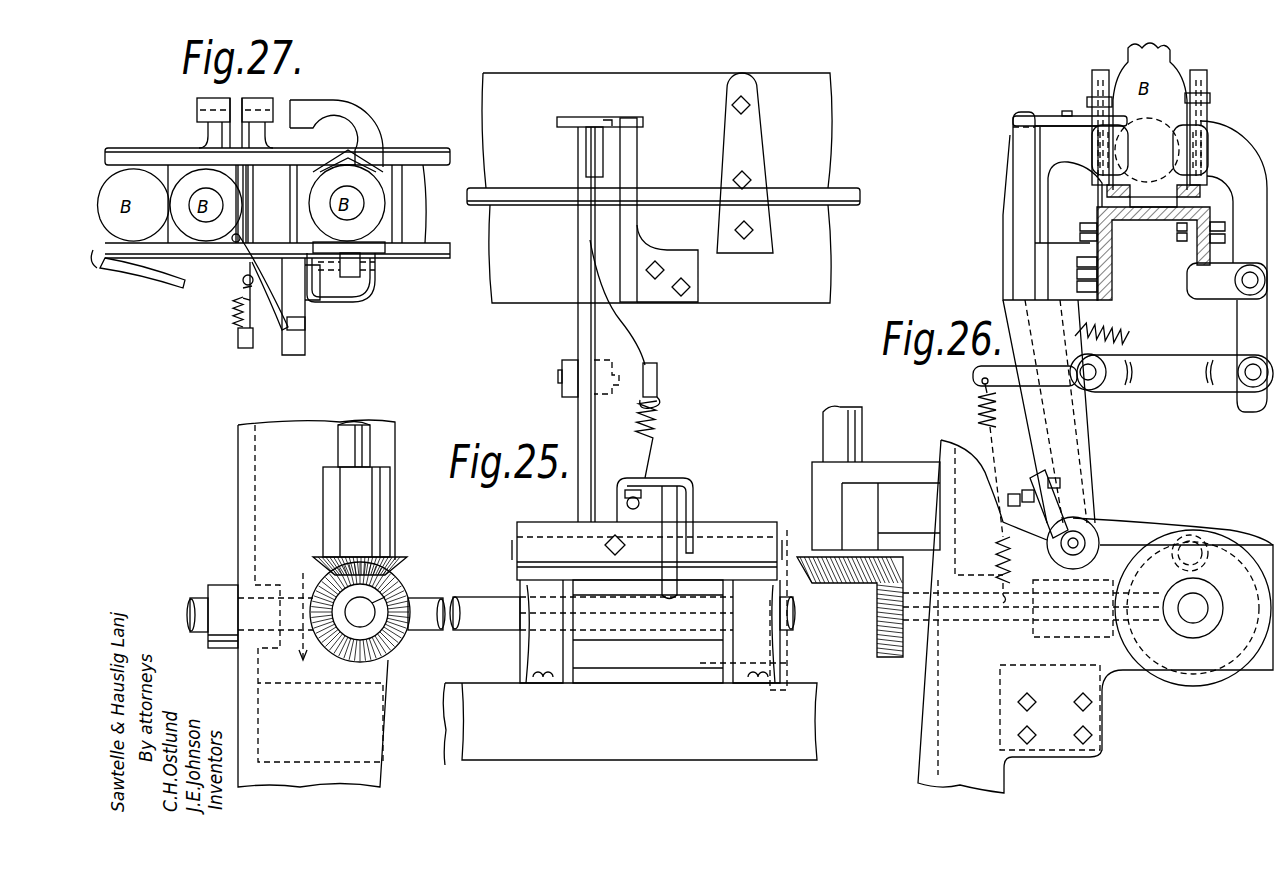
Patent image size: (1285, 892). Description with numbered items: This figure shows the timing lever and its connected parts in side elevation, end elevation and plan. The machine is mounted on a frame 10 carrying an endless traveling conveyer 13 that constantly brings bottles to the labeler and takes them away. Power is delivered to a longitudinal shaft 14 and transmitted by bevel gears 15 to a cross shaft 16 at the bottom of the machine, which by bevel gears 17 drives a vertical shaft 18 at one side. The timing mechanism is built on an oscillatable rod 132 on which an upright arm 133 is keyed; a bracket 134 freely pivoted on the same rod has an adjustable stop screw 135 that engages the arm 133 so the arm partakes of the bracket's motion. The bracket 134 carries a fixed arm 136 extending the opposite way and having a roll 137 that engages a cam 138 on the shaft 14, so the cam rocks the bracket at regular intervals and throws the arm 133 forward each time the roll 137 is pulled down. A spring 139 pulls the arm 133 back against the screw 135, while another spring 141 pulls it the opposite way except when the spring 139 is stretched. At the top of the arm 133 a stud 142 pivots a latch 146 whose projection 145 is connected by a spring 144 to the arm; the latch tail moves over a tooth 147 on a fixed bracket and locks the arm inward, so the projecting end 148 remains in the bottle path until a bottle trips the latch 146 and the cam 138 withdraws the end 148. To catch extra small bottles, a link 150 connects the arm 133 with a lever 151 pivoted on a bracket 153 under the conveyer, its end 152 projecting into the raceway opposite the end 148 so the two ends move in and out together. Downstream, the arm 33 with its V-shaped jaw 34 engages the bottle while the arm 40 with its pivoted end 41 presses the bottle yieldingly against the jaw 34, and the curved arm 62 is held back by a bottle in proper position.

In FIG. 25, the frame 10 is at (240, 520).
In FIG. 26, the frame 10 is at (922, 706).
In FIG. 27, the traveling conveyer 13 is at (420, 222).
In FIG. 25, the traveling conveyer 13 is at (860, 198).
In FIG. 26, the traveling conveyer 13 is at (1140, 220).
In FIG. 25, the longitudinal shaft 14 is at (492, 600).
In FIG. 26, the longitudinal shaft 14 is at (1192, 614).
In FIG. 25, the bevel gears 15 is at (300, 660).
In FIG. 26, the bevel gears 15 is at (1173, 647).
In FIG. 25, the cross shaft 16 is at (372, 605).
In FIG. 26, the cross shaft 16 is at (983, 622).
In FIG. 25, the bevel gears 17 is at (400, 562).
In FIG. 26, the bevel gears 17 is at (877, 597).
In FIG. 25, the vertical shaft 18 is at (342, 448).
In FIG. 26, the vertical shaft 18 is at (825, 428).
In FIG. 27, the arm 33 is at (358, 110).
In FIG. 27, the V-shaped jaw 34 is at (365, 160).
In FIG. 27, the arm 40 is at (370, 293).
In FIG. 27, the pivoted end 41 is at (380, 255).
In FIG. 27, the arm 62 is at (158, 272).
In FIG. 25, the oscillatable rod 132 is at (517, 548).
In FIG. 26, the oscillatable rod 132 is at (1085, 532).
In FIG. 27, the arm 133 is at (247, 350).
In FIG. 25, the arm 133 is at (578, 245).
In FIG. 26, the arm 133 is at (1003, 143).
In FIG. 25, the bracket 134 is at (688, 487).
In FIG. 26, the bracket 134 is at (1058, 508).
In FIG. 25, the adjustable stop screw 135 is at (626, 504).
In FIG. 26, the adjustable stop screw 135 is at (1035, 495).
In FIG. 26, the fixed arm 136 is at (1143, 537).
In FIG. 26, the roll 137 is at (1205, 545).
In FIG. 25, the cam 138 is at (712, 663).
In FIG. 26, the cam 138 is at (1233, 683).
In FIG. 25, the spring 139 is at (656, 416).
In FIG. 26, the spring 139 is at (978, 410).
In FIG. 26, the spring 141 is at (1129, 333).
In FIG. 27, the stud 142 is at (245, 288).
In FIG. 25, the stud 142 is at (597, 117).
In FIG. 26, the stud 142 is at (1067, 111).
In FIG. 27, the spring 144 is at (236, 312).
In FIG. 25, the spring 144 is at (566, 131).
In FIG. 27, the projection 145 is at (243, 280).
In FIG. 27, the latch 146 is at (243, 300).
In FIG. 25, the latch 146 is at (612, 118).
In FIG. 26, the latch 146 is at (1127, 119).
In FIG. 27, the tooth 147 is at (300, 330).
In FIG. 25, the tooth 147 is at (638, 130).
In FIG. 26, the tooth 147 is at (1017, 112).
In FIG. 27, the projecting end 148 is at (240, 234).
In FIG. 26, the projecting end 148 is at (1127, 160).
In FIG. 25, the link 150 is at (568, 360).
In FIG. 26, the link 150 is at (1193, 384).
In FIG. 26, the lever 151 is at (1250, 358).
In FIG. 27, the end 152 is at (245, 178).
In FIG. 26, the end 152 is at (1177, 158).
In FIG. 27, the bracket 153 is at (215, 137).
In FIG. 26, the bracket 153 is at (1193, 280).